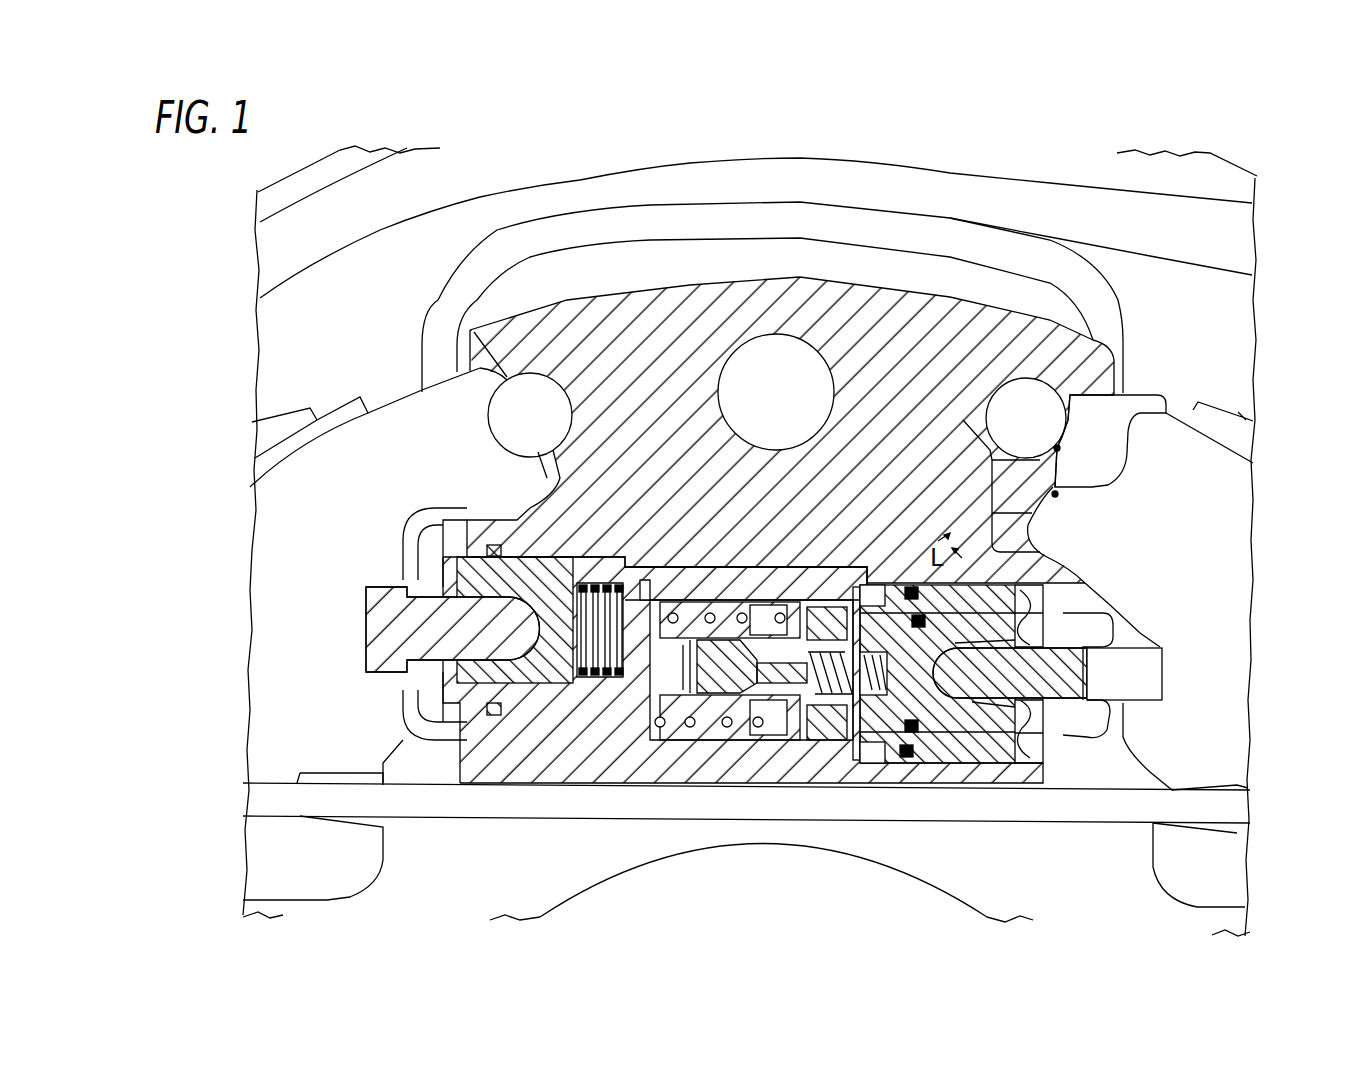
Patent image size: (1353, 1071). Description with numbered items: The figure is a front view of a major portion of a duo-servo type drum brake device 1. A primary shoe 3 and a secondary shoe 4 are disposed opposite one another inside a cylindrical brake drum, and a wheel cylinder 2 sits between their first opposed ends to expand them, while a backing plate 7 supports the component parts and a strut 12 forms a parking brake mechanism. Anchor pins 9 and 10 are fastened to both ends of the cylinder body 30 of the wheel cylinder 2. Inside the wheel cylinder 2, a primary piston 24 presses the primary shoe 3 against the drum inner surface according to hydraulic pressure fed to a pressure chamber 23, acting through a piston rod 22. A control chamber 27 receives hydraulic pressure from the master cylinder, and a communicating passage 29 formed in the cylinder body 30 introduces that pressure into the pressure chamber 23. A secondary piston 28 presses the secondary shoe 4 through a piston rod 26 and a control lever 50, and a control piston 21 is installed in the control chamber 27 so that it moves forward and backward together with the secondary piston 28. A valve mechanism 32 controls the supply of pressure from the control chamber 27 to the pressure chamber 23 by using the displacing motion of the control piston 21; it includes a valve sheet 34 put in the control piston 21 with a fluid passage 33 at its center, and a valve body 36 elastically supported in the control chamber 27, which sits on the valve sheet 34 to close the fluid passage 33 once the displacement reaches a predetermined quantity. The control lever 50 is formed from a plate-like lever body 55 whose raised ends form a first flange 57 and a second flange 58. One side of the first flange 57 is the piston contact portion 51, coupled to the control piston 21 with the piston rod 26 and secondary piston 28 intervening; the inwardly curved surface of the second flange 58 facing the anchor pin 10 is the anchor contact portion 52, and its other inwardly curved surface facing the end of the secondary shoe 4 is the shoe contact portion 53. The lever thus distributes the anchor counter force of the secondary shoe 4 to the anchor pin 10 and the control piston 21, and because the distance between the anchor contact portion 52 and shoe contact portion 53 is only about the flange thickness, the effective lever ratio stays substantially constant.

The drum brake device 1 is at (1258, 326).
The wheel cylinder 2 is at (1065, 320).
The primary shoe 3 is at (323, 504).
The secondary shoe 4 is at (1077, 526).
The backing plate 7 is at (277, 362).
The anchor pin 9 is at (552, 432).
The anchor pin 10 is at (1000, 402).
The strut 12 is at (582, 807).
The control piston 21 is at (733, 600).
The piston rod 22 is at (405, 638).
The pressure chamber 23 is at (640, 580).
The primary piston 24 is at (537, 690).
The piston rod 26 is at (1017, 670).
The control chamber 27 is at (668, 730).
The secondary piston 28 is at (933, 703).
The communicating passage 29 is at (703, 573).
The cylinder body 30 is at (614, 338).
The valve mechanism 32 is at (663, 610).
The fluid passage 33 is at (780, 673).
The valve sheet 34 is at (775, 713).
The valve body 36 is at (697, 673).
The control lever 50 is at (987, 462).
The piston contact portion 51 is at (1062, 685).
The anchor contact portion 52 is at (1057, 448).
The shoe contact portion 53 is at (1055, 494).
The lever body 55 is at (1130, 432).
The first flange 57 is at (1150, 670).
The second flange 58 is at (1085, 407).